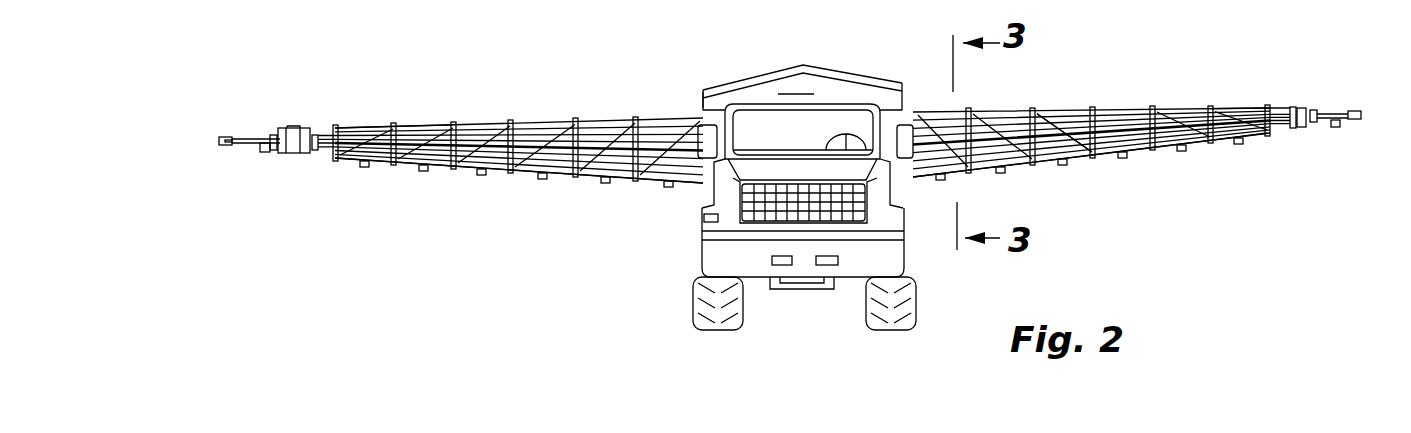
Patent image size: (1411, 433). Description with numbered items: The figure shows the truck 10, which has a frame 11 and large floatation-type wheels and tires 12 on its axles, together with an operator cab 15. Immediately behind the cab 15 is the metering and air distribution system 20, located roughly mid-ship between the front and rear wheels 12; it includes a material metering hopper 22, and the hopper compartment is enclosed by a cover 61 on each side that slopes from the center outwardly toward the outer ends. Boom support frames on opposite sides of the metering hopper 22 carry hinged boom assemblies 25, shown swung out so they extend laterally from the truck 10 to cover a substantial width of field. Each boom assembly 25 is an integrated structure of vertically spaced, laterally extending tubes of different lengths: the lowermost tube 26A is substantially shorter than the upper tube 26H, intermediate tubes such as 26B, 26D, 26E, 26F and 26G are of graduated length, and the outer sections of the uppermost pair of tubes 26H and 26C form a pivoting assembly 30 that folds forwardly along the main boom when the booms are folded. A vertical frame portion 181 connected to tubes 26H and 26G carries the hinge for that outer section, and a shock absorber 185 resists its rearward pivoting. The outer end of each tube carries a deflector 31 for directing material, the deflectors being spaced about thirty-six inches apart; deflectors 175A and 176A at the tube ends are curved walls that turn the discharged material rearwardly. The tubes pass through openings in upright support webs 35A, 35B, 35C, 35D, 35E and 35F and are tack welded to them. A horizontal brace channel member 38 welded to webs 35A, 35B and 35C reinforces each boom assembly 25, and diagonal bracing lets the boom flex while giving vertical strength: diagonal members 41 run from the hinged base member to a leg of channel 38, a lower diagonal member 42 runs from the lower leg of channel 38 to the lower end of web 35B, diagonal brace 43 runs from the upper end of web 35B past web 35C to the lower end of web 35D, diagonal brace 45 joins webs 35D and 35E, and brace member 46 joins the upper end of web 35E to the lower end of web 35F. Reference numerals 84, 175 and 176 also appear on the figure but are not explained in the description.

The truck 10 is at (780, 52).
The frame 11 is at (750, 245).
The wheels and tires 12 is at (703, 293).
The operator cab 15 is at (826, 100).
The metering and air distribution system 20 is at (832, 66).
The material metering hopper 22 is at (706, 90).
The boom assemblies 25 is at (445, 181).
The lowermost tube 26A is at (678, 186).
The tube 26B is at (600, 180).
The tube 26C is at (525, 170).
The tube 26D is at (478, 166).
The tube 26E is at (1183, 137).
The tube 26F is at (360, 157).
The tube 26G is at (405, 127).
The upper tube 26H is at (372, 126).
The pivoting assembly 30 is at (239, 124).
The deflector 31 is at (428, 168).
The upright support web 35A is at (636, 122).
The upright support web 35B is at (574, 121).
The upright support web 35C is at (511, 128).
The upright support web 35D is at (455, 123).
The upright support web 35E is at (393, 124).
The upright support web 35F is at (334, 128).
The horizontal brace channel member 38 is at (592, 147).
The diagonal members 41 is at (690, 125).
The lower diagonal member 42 is at (586, 178).
The diagonal brace 43 is at (497, 150).
The diagonal brace 45 is at (403, 162).
The brace member 46 is at (348, 152).
The cover 61 is at (743, 78).
The tank marking 84 is at (796, 82).
The end nozzle 175 is at (238, 143).
The deflector 175A is at (224, 136).
The nozzle bracket 176 is at (268, 153).
The deflector 176A is at (1337, 128).
The vertical frame portion 181 is at (1300, 130).
The shock absorber 185 is at (297, 127).